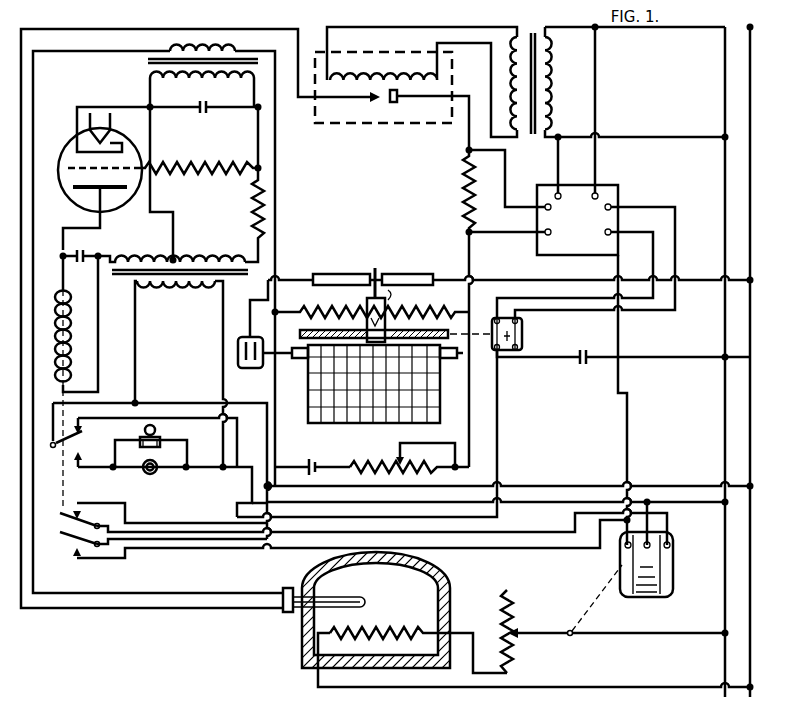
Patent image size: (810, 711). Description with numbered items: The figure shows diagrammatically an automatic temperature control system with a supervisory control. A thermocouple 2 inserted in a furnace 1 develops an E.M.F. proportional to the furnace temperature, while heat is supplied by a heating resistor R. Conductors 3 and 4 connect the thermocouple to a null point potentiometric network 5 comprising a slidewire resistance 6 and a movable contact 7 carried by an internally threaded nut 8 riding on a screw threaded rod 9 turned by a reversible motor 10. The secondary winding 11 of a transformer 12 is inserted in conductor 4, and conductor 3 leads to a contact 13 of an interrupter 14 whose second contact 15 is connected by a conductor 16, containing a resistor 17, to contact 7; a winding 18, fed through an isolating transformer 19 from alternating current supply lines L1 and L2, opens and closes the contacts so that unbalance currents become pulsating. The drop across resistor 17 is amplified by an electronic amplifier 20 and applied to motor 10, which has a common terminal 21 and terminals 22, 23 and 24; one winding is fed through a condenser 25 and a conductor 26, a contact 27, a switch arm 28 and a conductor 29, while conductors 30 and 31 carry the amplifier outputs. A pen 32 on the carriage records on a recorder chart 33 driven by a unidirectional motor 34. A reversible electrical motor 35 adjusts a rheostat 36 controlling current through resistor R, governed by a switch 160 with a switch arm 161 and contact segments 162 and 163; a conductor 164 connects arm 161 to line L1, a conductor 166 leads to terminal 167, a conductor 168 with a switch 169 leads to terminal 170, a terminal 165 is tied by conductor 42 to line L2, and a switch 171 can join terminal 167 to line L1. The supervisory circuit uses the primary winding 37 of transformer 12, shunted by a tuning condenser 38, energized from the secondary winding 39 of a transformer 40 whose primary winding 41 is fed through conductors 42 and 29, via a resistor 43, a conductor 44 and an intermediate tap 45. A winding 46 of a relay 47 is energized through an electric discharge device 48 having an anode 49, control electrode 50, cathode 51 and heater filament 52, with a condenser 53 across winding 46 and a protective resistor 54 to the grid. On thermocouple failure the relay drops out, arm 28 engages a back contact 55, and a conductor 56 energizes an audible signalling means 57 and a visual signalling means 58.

The furnace 1 is at (318, 560).
The thermocouple 2 is at (350, 597).
The conductor 3 is at (100, 609).
The conductor 4 is at (100, 592).
The null point potentiometric network 5 is at (398, 440).
The slidewire resistance 6 is at (352, 310).
The contact 7 is at (368, 316).
The internally threaded nut 8 is at (360, 330).
The screw threaded rod 9 is at (302, 334).
The reversible motor 10 is at (504, 352).
The secondary winding 11 is at (175, 45).
The transformer 12 is at (148, 61).
The contact 13 is at (372, 104).
The interrupter 14 is at (324, 50).
The contact 15 is at (396, 104).
The conductor 16 is at (466, 138).
The resistor 17 is at (462, 200).
The winding 18 is at (372, 66).
The isolating transformer 19 is at (532, 30).
The electronic amplifier 20 is at (545, 186).
The common terminal 21 is at (494, 350).
The terminal 22 is at (520, 346).
The terminal 23 is at (496, 318).
The terminal 24 is at (520, 322).
The condenser 25 is at (586, 350).
The conductor 26 is at (500, 440).
The contact 27 is at (80, 430).
The switch arm 28 is at (60, 447).
The conductor 29 is at (180, 402).
The conductor 30 is at (650, 238).
The conductor 31 is at (640, 207).
The pen 32 is at (362, 346).
The recorder chart 33 is at (314, 394).
The unidirectional motor 34 is at (248, 336).
The reversible electrical motor 35 is at (674, 582).
The rheostat 36 is at (500, 614).
The primary winding 37 is at (186, 80).
The tuning condenser 38 is at (203, 114).
The secondary winding 39 is at (252, 228).
The transformer 40 is at (115, 272).
The primary winding 41 is at (182, 290).
The conductor 42 is at (584, 496).
The resistor 43 is at (252, 204).
The conductor 44 is at (140, 192).
The intermediate tap 45 is at (173, 254).
The winding 46 is at (68, 296).
The relay 47 is at (158, 328).
The electric discharge device 48 is at (64, 172).
The anode 49 is at (88, 192).
The control electrode 50 is at (112, 176).
The cathode 51 is at (72, 146).
The heater filament 52 is at (104, 136).
The condenser 53 is at (84, 250).
The protective resistor 54 is at (218, 167).
The back contact 55 is at (80, 462).
The conductor 56 is at (224, 452).
The audible signalling means 57 is at (158, 438).
The visual signalling means 58 is at (152, 474).
The switch 160 is at (392, 214).
The switch arm 161 is at (372, 270).
The contact segment 162 is at (402, 272).
The contact segment 163 is at (324, 272).
The conductor 164 is at (696, 279).
The terminal 165 is at (642, 550).
The conductor 166 is at (620, 396).
The terminal 167 is at (622, 548).
The conductor 168 is at (266, 298).
The switch 169 is at (84, 508).
The terminal 170 is at (670, 542).
The switch 171 is at (70, 548).
The heating resistor R is at (394, 632).
The alternating current supply line L1 is at (752, 27).
The alternating current supply line L2 is at (722, 27).